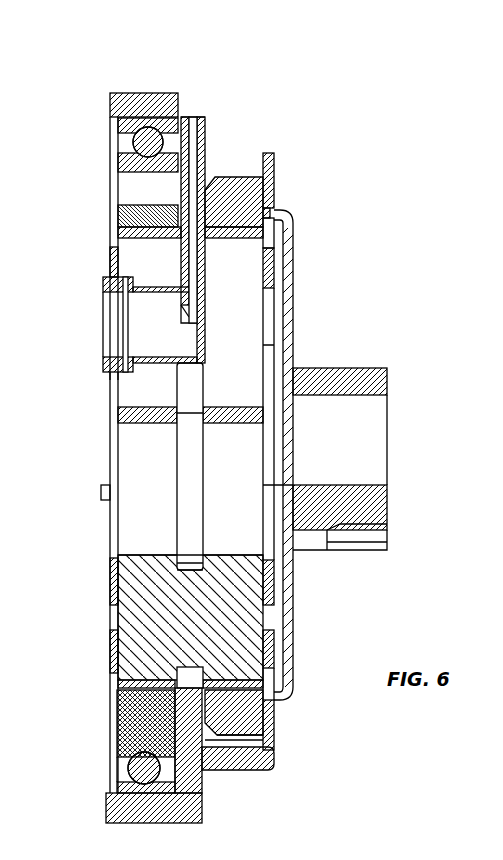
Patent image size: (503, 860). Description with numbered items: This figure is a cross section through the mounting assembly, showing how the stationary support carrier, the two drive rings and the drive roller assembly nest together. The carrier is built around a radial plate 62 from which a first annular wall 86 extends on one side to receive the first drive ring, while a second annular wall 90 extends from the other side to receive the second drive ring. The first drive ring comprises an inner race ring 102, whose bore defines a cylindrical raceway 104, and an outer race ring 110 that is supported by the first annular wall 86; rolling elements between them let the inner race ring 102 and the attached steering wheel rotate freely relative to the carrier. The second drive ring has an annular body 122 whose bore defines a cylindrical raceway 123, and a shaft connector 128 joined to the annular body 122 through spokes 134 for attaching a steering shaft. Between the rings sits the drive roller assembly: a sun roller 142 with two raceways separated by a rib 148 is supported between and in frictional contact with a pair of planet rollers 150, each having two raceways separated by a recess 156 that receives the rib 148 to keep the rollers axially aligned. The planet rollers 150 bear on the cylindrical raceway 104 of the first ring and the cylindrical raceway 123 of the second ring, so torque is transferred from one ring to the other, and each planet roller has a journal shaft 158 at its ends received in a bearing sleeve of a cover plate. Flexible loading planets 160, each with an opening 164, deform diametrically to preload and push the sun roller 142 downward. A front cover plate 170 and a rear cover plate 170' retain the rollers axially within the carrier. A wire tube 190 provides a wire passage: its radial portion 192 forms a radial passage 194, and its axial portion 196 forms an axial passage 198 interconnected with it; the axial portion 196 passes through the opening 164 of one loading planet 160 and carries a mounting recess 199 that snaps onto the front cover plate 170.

The radial plate 62 is at (202, 790).
The first annular wall 86 is at (117, 823).
The second annular wall 90 is at (247, 767).
The inner race ring 102 is at (122, 162).
The cylindrical raceway 104 is at (122, 215).
The outer race ring 110 is at (110, 785).
The annular body 122 is at (275, 165).
The cylindrical raceway 123 is at (263, 220).
The shaft connector 128 is at (343, 368).
The spokes 134 is at (290, 303).
The sun roller 142 is at (128, 458).
The rib 148 is at (202, 498).
The planet rollers 150 is at (125, 648).
The recess 156 is at (183, 568).
The journal shaft 158 is at (108, 620).
The loading planets 160 is at (122, 233).
The opening 164 is at (135, 258).
The front cover plate 170 is at (75, 597).
The rear cover plate 170' is at (328, 614).
The wire tube 190 is at (215, 115).
The radial portion 192 is at (205, 148).
The radial passage 194 is at (193, 117).
The axial portion 196 is at (137, 380).
The axial passage 198 is at (107, 323).
The mounting recess 199 is at (102, 283).